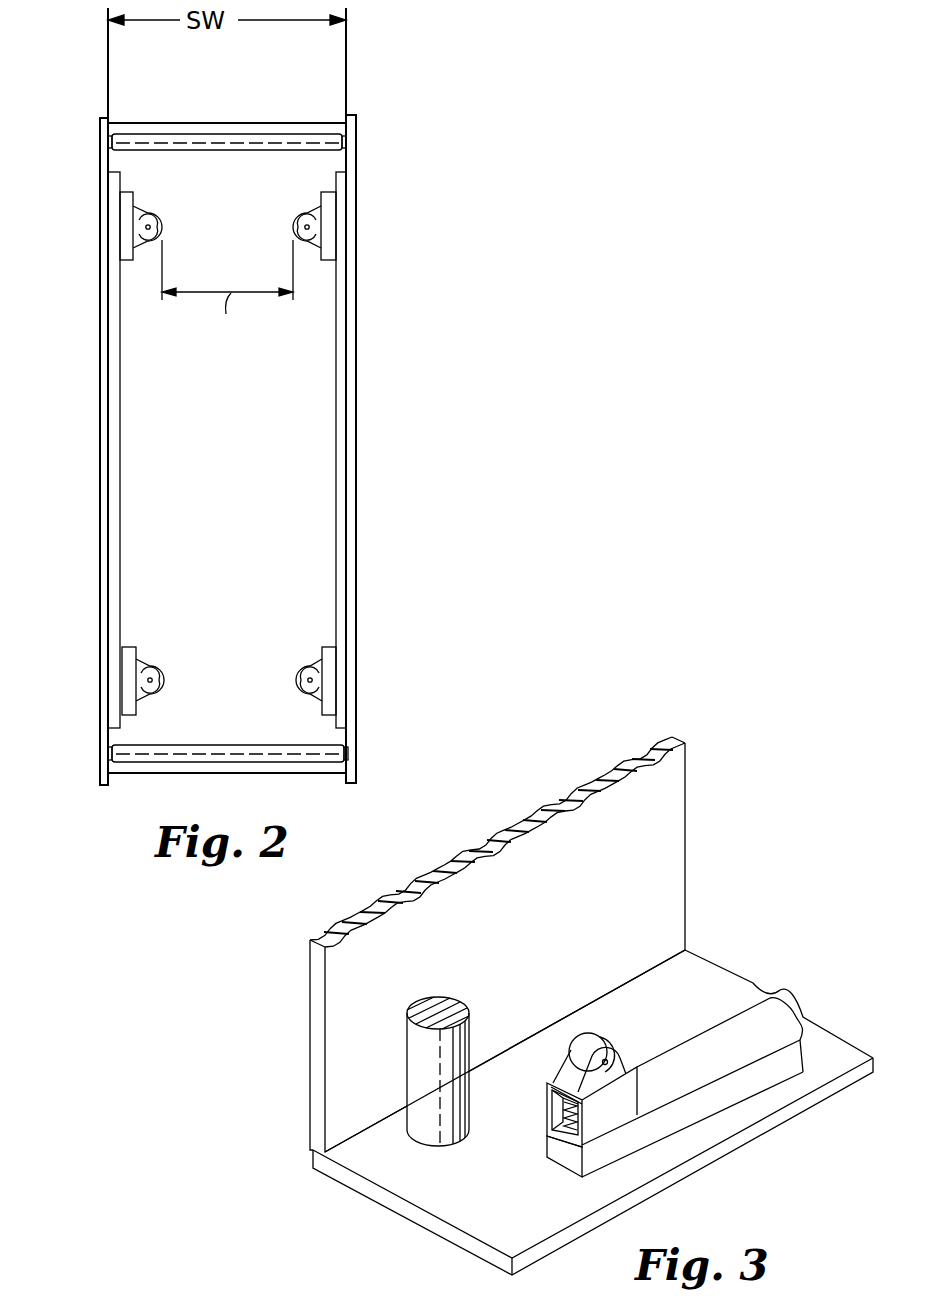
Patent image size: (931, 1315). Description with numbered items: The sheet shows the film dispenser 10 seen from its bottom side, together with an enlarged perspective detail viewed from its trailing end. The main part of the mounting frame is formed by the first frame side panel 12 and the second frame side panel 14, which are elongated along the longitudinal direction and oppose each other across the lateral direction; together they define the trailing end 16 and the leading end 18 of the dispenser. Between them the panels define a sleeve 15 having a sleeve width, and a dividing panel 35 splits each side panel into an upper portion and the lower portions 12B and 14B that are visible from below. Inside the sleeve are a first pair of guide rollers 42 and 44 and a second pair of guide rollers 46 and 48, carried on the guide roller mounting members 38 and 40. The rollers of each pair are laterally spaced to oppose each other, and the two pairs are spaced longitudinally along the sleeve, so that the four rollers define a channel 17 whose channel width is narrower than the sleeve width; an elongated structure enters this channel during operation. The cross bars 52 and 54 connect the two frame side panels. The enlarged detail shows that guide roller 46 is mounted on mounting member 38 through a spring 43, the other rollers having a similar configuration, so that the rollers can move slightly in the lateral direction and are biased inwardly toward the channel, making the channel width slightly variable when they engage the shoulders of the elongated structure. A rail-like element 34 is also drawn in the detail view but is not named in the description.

In FIG. 2, the film dispenser 10 is at (440, 246).
In FIG. 2, the first frame side panel 12 is at (96, 443).
In FIG. 3, the first frame side panel 12 is at (753, 981).
In FIG. 2, the lower portion of first frame side panel 12B is at (100, 213).
In FIG. 2, the second frame side panel 14 is at (370, 427).
In FIG. 2, the lower portion of second frame side panel 14B is at (357, 225).
In FIG. 2, the sleeve 15 is at (167, 110).
In FIG. 2, the trailing end 16 is at (106, 118).
In FIG. 2, the channel 17 is at (245, 433).
In FIG. 2, the leading end 18 is at (108, 787).
In FIG. 3, the rail 34 is at (647, 1163).
In FIG. 2, the dividing panel 35 is at (272, 481).
In FIG. 3, the dividing panel 35 is at (660, 797).
In FIG. 2, the guide roller mounting member 38 is at (115, 307).
In FIG. 3, the guide roller mounting member 38 is at (562, 1159).
In FIG. 2, the guide roller mounting member 40 is at (345, 310).
In FIG. 2, the guide roller 42 is at (162, 672).
In FIG. 3, the spring 43 is at (547, 1138).
In FIG. 2, the guide roller 44 is at (303, 670).
In FIG. 2, the guide roller 46 is at (157, 217).
In FIG. 3, the guide roller 46 is at (595, 1037).
In FIG. 2, the guide roller 48 is at (298, 217).
In FIG. 2, the cross bar 52 is at (252, 140).
In FIG. 3, the cross bar 52 is at (440, 1003).
In FIG. 2, the cross bar 54 is at (215, 743).